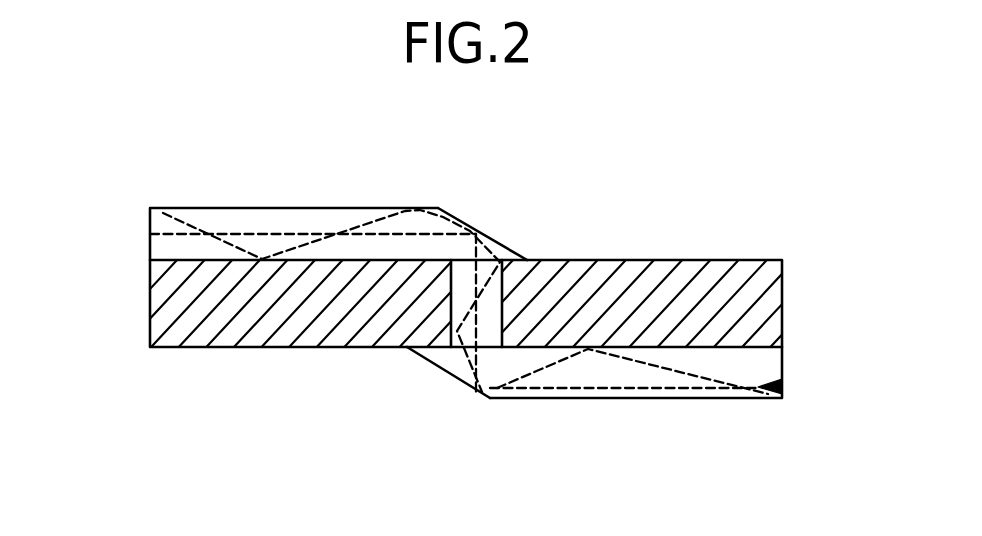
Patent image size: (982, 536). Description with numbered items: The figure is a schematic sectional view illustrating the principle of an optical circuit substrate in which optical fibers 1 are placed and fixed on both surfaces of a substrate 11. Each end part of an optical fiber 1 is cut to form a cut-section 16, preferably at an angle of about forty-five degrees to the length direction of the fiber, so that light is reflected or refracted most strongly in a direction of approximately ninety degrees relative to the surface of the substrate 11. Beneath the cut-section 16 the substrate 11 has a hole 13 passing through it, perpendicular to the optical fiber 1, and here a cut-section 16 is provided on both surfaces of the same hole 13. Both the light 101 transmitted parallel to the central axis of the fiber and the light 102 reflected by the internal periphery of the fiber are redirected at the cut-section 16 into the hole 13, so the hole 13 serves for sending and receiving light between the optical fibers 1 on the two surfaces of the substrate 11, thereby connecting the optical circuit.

The optical fiber 1 is at (150, 222).
The substrate 11 is at (783, 290).
The hole 13 is at (463, 290).
The cut-section 16 is at (467, 227).
The light 101 is at (595, 390).
The light 102 is at (349, 233).